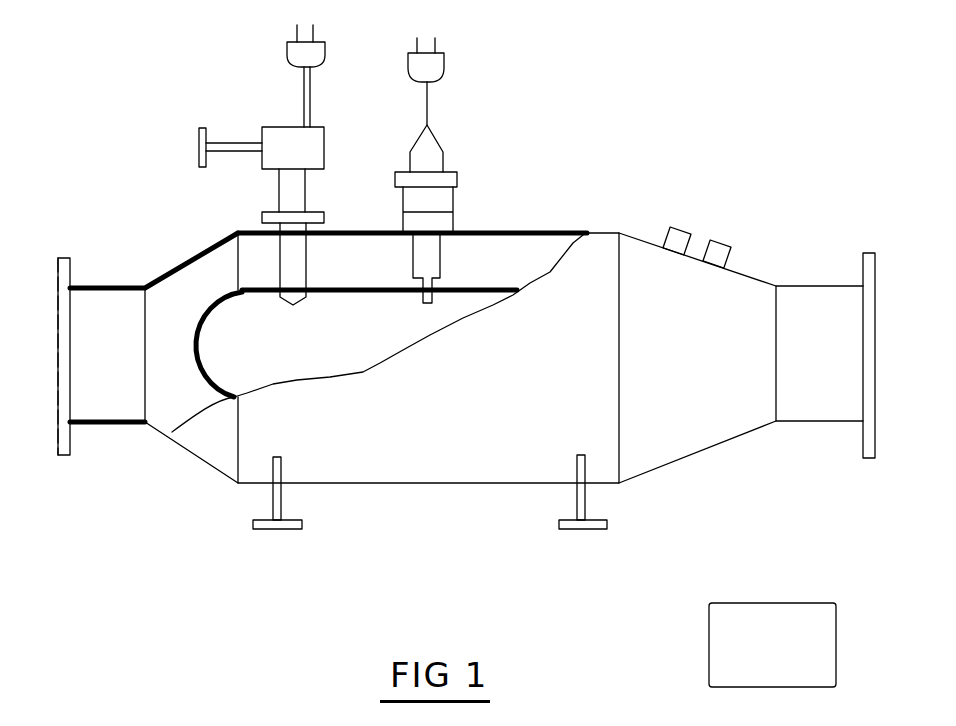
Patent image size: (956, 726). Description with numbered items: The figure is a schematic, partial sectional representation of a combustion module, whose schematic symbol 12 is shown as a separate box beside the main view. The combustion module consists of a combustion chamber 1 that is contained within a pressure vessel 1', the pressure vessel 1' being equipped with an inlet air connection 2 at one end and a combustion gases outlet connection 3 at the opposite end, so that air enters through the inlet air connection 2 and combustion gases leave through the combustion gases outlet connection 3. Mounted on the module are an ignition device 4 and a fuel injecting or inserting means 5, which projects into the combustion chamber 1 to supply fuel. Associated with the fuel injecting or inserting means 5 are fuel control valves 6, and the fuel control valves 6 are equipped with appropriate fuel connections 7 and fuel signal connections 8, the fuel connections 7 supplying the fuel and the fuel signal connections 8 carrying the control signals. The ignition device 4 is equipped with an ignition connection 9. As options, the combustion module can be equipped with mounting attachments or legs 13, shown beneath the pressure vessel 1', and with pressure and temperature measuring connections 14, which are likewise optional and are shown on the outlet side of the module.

The combustion chamber 1 is at (466, 358).
The pressure vessel 1' is at (361, 328).
The inlet air connection 2 is at (56, 408).
The combustion gases outlet connection 3 is at (870, 367).
The ignition device 4 is at (440, 262).
The fuel injecting or inserting means 5 is at (280, 260).
The fuel control valves 6 is at (282, 127).
The fuel connections 7 is at (198, 147).
The fuel signal connections 8 is at (287, 50).
The ignition connection 9 is at (450, 63).
The schematic symbol of the combustion module 12 is at (815, 663).
The mounting attachments or legs 13 is at (278, 530).
The pressure and temperature measuring connections 14 is at (728, 242).